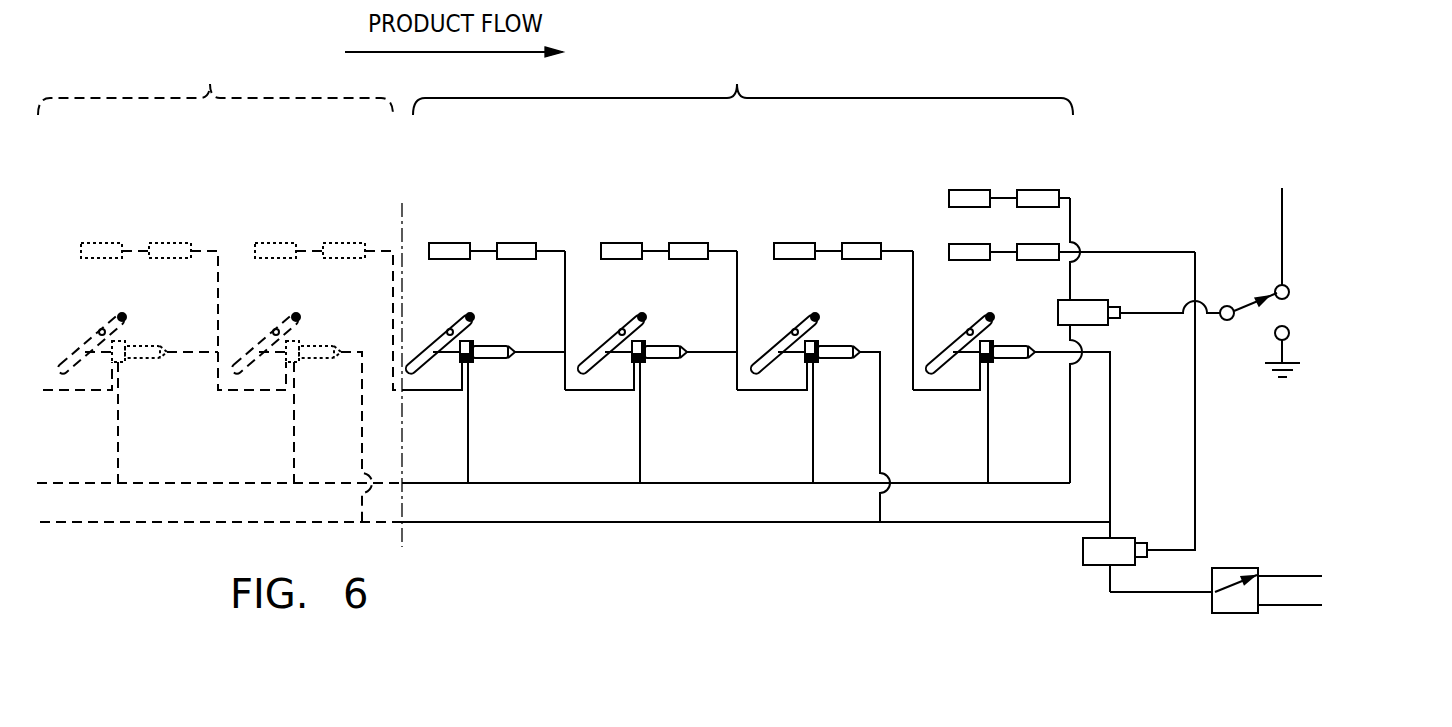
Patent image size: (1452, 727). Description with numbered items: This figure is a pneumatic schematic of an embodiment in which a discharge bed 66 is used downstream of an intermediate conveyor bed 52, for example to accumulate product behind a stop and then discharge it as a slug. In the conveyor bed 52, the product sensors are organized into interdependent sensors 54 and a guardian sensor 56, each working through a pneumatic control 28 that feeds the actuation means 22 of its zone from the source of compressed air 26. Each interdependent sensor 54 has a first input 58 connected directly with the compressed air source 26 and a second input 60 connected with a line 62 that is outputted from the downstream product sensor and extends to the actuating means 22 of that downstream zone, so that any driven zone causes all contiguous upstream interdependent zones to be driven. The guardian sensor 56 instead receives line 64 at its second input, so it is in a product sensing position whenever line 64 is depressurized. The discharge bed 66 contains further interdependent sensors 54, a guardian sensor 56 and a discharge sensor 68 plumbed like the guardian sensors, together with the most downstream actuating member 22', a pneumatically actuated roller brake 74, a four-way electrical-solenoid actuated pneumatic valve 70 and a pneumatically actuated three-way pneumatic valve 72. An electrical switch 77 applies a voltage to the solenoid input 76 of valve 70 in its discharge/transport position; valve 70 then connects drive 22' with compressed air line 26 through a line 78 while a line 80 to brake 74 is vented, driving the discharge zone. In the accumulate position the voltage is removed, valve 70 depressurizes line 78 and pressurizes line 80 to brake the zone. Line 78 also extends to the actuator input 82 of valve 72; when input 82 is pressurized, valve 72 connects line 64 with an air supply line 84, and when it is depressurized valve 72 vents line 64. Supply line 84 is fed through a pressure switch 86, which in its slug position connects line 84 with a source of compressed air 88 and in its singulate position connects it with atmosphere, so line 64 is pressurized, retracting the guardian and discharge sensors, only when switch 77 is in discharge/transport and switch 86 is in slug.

The actuation means 22 is at (671, 220).
The most downstream actuating member 22' is at (1004, 235).
The source of compressed air 26 is at (653, 485).
The pneumatic control 28 is at (468, 363).
The conveyor bed 52 is at (193, 70).
The interdependent sensor 54 is at (466, 316).
The guardian sensor 56 is at (811, 318).
The first input 58 is at (640, 452).
The second input 60 is at (697, 352).
The line 62 is at (565, 313).
The line 64 is at (813, 523).
The discharge bed 66 is at (722, 70).
The discharge sensor 68 is at (988, 318).
The four-way electrical-solenoid actuated pneumatic valve 70 is at (1097, 326).
The pneumatically actuated three-way pneumatic valve 72 is at (1085, 563).
The pneumatically actuated roller brake 74 is at (970, 190).
The input 76 is at (1121, 308).
The electrical switch 77 is at (1255, 306).
The line 78 is at (1116, 252).
The line 80 is at (1072, 219).
The actuator input 82 is at (1195, 463).
The air supply line 84 is at (1137, 593).
The pressure switch 86 is at (1237, 568).
The source of compressed air 88 is at (1305, 576).